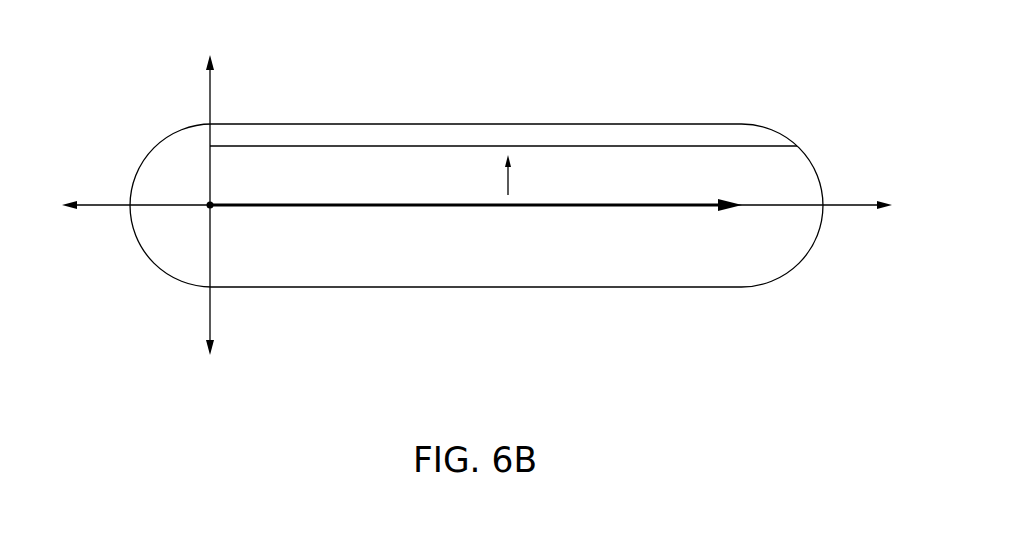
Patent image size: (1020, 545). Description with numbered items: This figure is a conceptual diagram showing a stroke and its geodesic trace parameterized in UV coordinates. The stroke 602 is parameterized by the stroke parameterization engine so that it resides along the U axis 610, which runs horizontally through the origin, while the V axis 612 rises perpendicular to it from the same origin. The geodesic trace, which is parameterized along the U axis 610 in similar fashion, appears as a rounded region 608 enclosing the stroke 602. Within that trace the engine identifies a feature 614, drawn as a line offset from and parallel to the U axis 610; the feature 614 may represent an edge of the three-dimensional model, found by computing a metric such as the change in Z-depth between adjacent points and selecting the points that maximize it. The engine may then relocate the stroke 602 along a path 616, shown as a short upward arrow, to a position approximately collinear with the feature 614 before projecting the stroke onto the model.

The stroke 602 is at (553, 205).
The rounded (stadium-shaped) region boundary 608 is at (678, 287).
The U axis 610 is at (847, 207).
The V axis 612 is at (210, 322).
The feature 614 is at (637, 147).
The path 616 is at (510, 187).